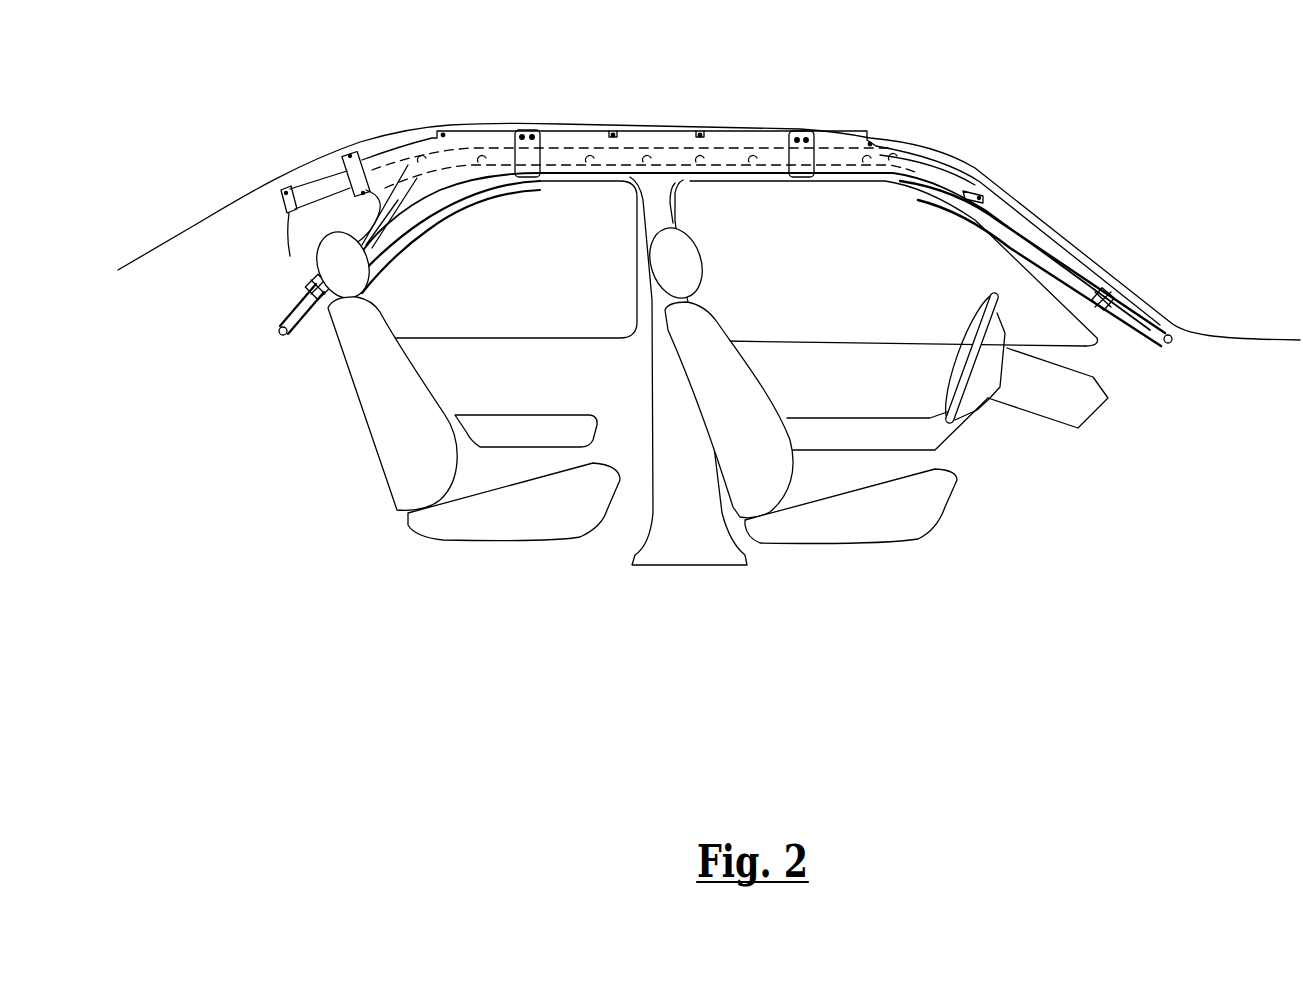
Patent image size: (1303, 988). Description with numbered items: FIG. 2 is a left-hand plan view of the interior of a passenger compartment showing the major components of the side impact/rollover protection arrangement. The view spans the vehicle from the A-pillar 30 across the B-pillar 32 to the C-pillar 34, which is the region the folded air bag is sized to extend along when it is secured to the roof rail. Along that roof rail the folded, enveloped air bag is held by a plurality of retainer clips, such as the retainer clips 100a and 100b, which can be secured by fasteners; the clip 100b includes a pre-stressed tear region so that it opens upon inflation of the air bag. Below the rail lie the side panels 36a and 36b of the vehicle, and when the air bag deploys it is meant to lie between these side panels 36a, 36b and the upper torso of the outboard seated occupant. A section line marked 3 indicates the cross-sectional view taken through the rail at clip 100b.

The A-pillar 30 is at (1031, 221).
The B-pillar 32 is at (658, 203).
The C-pillar 34 is at (392, 139).
The side panel 36a is at (882, 355).
The side panel 36b is at (517, 355).
The retainer clip 100a is at (525, 160).
The retainer clip 100b is at (800, 157).
The section line 3- 3 is at (778, 203).